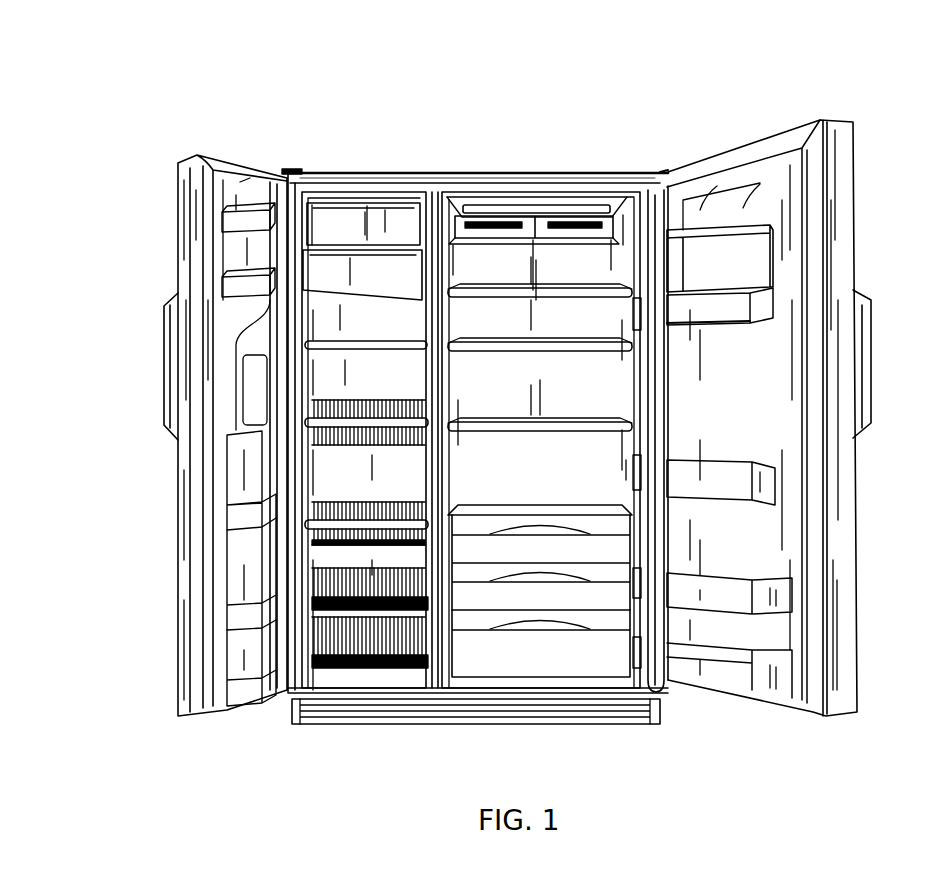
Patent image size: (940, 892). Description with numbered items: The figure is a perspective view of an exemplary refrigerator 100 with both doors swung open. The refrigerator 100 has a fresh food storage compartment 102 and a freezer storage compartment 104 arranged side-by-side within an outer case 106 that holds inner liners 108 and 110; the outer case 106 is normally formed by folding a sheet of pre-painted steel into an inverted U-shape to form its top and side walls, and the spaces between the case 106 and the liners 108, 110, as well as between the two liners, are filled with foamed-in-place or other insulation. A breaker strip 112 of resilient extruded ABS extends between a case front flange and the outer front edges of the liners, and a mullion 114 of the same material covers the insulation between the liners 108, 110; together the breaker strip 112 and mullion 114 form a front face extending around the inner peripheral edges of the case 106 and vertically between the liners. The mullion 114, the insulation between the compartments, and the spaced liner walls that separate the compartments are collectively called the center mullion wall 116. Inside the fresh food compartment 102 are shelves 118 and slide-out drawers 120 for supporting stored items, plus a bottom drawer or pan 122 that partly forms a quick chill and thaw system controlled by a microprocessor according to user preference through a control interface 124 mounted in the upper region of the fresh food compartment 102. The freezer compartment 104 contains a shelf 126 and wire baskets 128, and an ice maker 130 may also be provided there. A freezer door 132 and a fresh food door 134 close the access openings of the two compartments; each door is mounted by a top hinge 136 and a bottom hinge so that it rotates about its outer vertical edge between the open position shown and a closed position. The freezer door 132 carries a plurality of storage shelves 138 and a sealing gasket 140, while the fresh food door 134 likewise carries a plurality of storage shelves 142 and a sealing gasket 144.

The refrigerator 100 is at (466, 52).
The fresh food storage compartment 102 is at (626, 192).
The freezer storage compartment 104 is at (393, 218).
The outer case 106 is at (500, 168).
The inner liner 108 is at (546, 200).
The inner liner 110 is at (339, 197).
The breaker strip 112 is at (600, 182).
The mullion 114 is at (432, 403).
The center mullion wall 116 is at (455, 363).
The shelves 118 is at (558, 292).
The slide-out drawers 120 is at (556, 556).
The bottom drawer or pan 122 is at (556, 658).
The control interface 124 is at (490, 207).
The shelf 126 is at (366, 350).
The wire baskets 128 is at (337, 428).
The ice maker 130 is at (365, 283).
The freezer door 132 is at (172, 191).
The fresh food door 134 is at (876, 195).
The top hinge 136 is at (288, 170).
The storage shelves 138 is at (166, 600).
The sealing gasket 140 is at (214, 172).
The storage shelves 142 is at (700, 470).
The sealing gasket 144 is at (773, 147).